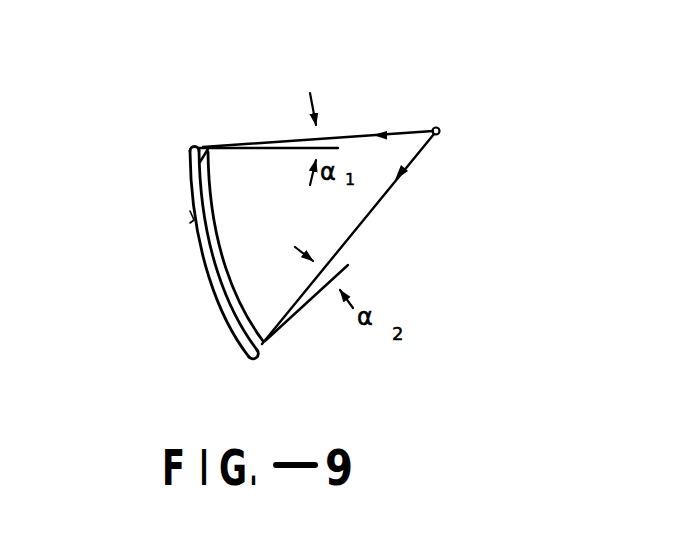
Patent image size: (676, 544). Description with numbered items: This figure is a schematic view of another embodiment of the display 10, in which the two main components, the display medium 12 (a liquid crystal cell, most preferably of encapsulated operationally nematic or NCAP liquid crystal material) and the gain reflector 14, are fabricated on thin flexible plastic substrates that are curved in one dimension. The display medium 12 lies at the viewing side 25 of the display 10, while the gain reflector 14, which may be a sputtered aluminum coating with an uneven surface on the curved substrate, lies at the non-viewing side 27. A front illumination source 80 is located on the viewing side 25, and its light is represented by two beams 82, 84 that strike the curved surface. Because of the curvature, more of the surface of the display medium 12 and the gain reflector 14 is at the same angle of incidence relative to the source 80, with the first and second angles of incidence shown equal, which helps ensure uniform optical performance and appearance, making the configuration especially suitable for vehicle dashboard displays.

The display 10 is at (164, 149).
The display medium 12 is at (209, 148).
The gain reflector 14 is at (191, 228).
The viewing side 25 is at (468, 302).
The non-viewing side 27 is at (137, 345).
The front illumination source 80 is at (440, 128).
The beam 82 is at (357, 135).
The beam 84 is at (375, 203).